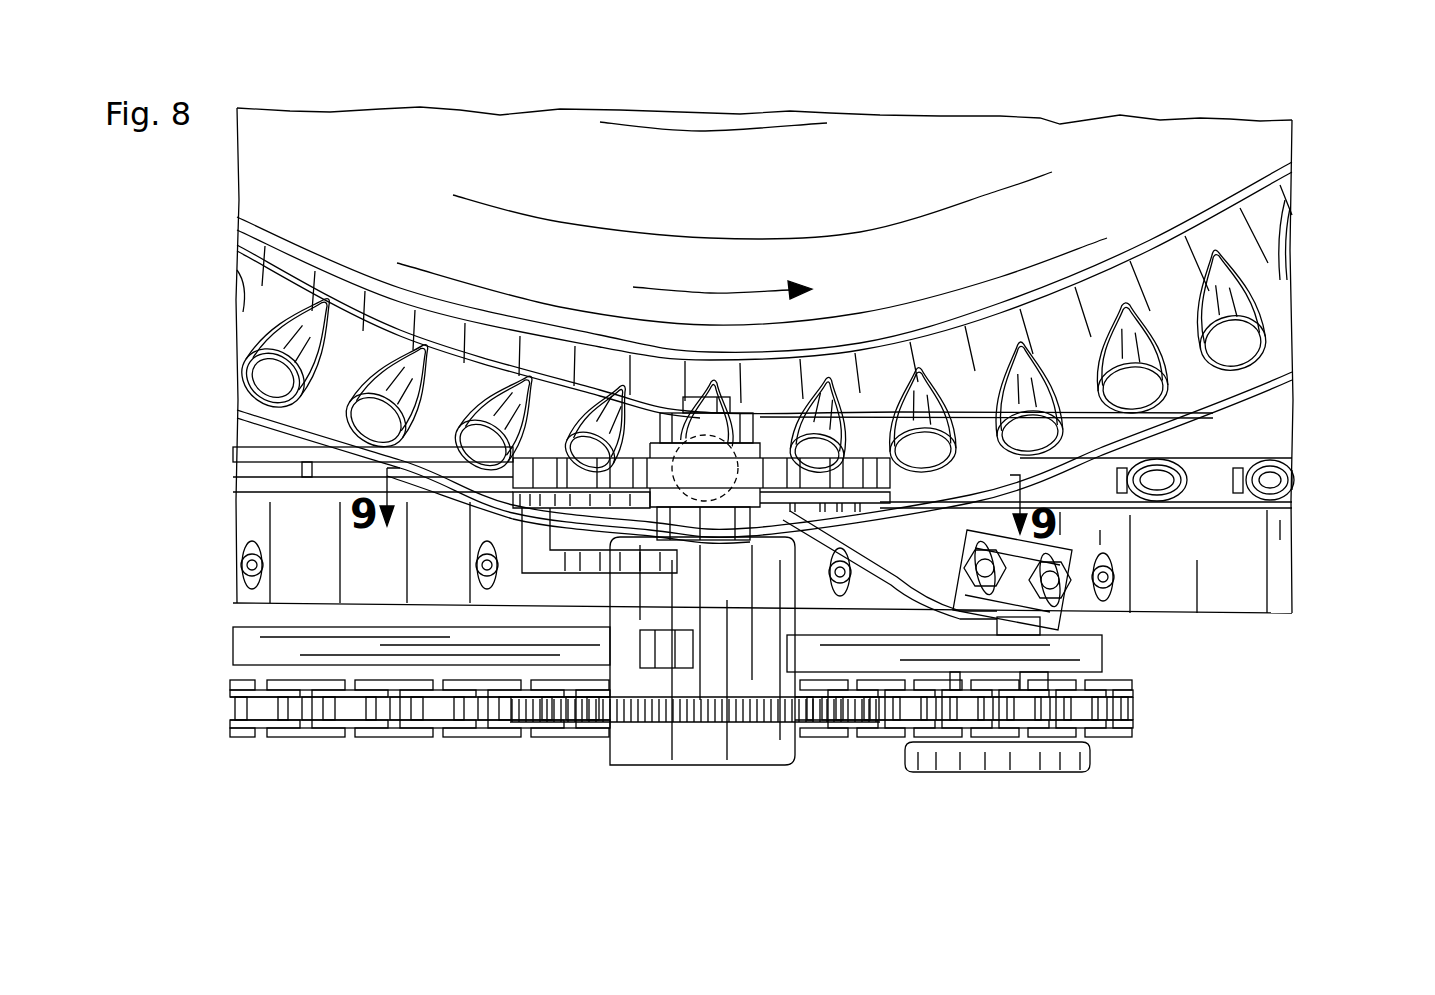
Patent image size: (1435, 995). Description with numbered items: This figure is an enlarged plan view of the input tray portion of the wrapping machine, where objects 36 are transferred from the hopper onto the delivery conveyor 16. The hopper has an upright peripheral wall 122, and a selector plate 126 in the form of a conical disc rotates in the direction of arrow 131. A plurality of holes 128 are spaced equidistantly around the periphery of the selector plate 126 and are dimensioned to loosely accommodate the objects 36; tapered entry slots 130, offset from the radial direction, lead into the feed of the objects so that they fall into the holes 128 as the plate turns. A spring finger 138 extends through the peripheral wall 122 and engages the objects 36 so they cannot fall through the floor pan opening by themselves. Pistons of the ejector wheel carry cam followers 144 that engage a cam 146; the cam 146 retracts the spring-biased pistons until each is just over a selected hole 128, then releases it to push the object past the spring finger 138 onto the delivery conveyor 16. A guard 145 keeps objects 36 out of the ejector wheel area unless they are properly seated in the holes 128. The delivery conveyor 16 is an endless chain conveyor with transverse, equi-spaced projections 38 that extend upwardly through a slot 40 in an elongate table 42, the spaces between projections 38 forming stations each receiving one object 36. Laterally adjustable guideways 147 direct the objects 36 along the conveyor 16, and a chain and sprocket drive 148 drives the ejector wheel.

The delivery conveyor 16 is at (1310, 480).
The objects 36 is at (262, 382).
The projections 38 is at (305, 478).
The slot 40 is at (240, 467).
The elongate table 42 is at (240, 486).
The peripheral wall 122 is at (1273, 387).
The selector plate 126 is at (987, 137).
The holes 128 is at (263, 377).
The tapered entry slots 130 is at (283, 323).
The arrow 131 is at (710, 292).
The spring finger 138 is at (883, 567).
The cam followers 144 is at (518, 560).
The guard 145 is at (450, 340).
The cam 146 is at (520, 515).
The guideways 147 is at (1275, 440).
The chain and sprocket drive 148 is at (463, 735).